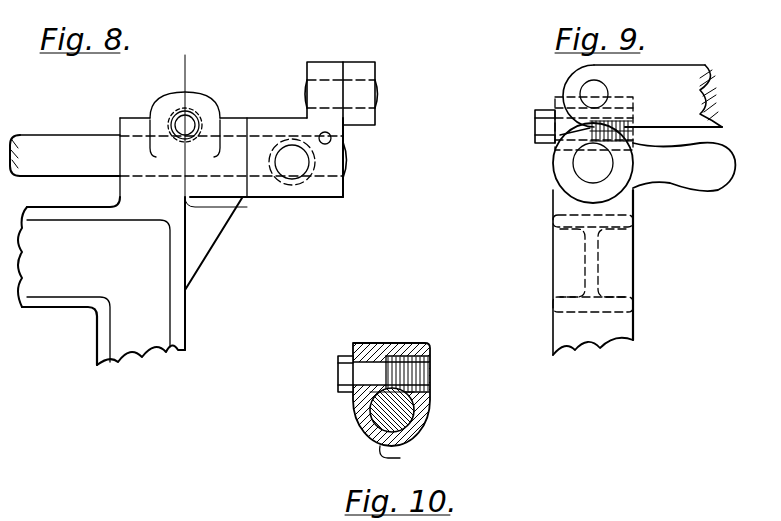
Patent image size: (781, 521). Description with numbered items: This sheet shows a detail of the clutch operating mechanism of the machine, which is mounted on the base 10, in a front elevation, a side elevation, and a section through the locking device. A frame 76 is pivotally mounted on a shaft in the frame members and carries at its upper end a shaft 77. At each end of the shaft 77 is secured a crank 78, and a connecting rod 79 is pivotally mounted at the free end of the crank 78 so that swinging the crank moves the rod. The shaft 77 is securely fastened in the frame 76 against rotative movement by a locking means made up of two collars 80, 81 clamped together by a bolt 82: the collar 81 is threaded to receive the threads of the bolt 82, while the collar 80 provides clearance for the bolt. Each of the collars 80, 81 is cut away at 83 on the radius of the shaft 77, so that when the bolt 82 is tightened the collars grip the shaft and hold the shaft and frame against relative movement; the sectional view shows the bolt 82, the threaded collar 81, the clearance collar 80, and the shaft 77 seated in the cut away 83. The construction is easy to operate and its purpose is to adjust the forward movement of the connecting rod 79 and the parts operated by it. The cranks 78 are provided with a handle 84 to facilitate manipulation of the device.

In FIG. 8, the base 10 is at (203, 298).
In FIG. 8, the frame 76 is at (97, 349).
In FIG. 9, the frame 76 is at (635, 280).
In FIG. 10, the frame 76 is at (366, 426).
In FIG. 8, the shaft 77 is at (60, 142).
In FIG. 9, the shaft 77 is at (588, 170).
In FIG. 10, the shaft 77 is at (404, 414).
In FIG. 8, the crank 78 is at (310, 72).
In FIG. 9, the crank 78 is at (560, 168).
In FIG. 8, the connecting rod 79 is at (370, 68).
In FIG. 9, the connecting rod 79 is at (685, 80).
In FIG. 10, the collar 80 is at (373, 350).
In FIG. 10, the collar 81 is at (430, 362).
In FIG. 8, the bolt 82 is at (196, 116).
In FIG. 9, the bolt 82 is at (535, 125).
In FIG. 10, the bolt 82 is at (343, 378).
In FIG. 10, the cut away 83 is at (405, 458).
In FIG. 9, the handle 84 is at (690, 182).